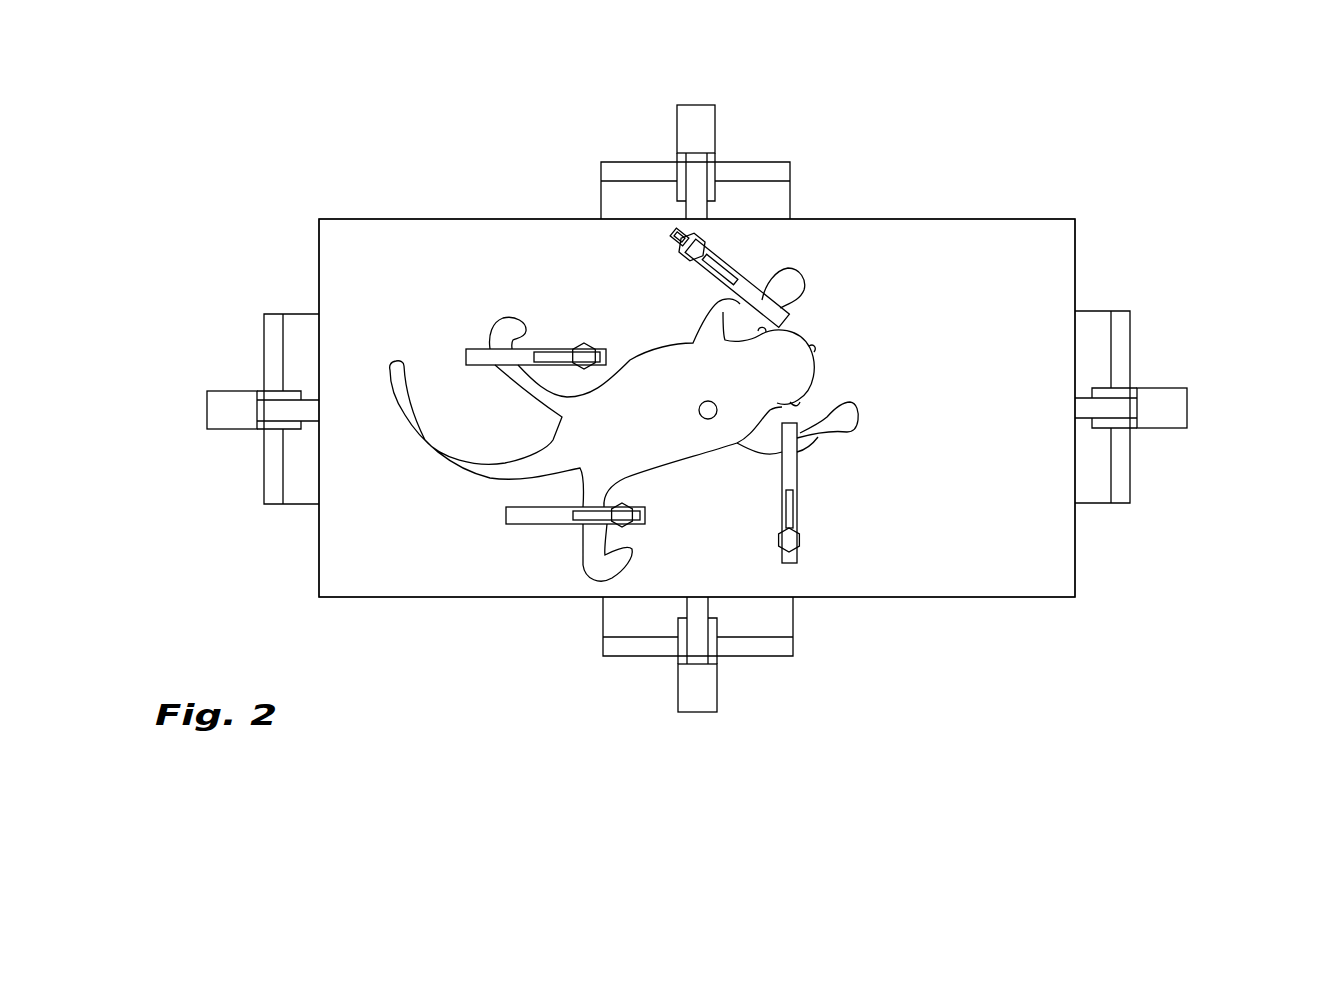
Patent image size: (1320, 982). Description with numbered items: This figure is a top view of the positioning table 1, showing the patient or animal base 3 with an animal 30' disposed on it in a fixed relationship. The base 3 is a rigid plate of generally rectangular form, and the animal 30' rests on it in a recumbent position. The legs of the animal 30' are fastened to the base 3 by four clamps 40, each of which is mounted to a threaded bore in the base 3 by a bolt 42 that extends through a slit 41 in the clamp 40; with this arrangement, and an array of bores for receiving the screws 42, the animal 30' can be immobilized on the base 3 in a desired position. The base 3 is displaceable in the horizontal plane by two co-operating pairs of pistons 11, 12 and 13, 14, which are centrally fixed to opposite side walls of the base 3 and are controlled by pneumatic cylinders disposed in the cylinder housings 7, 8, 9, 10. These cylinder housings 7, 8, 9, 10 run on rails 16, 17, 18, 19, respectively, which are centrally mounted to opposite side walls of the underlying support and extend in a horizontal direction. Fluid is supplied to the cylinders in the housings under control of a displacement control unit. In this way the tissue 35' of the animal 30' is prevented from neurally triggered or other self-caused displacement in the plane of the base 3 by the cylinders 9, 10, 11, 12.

The positioning table 1 is at (870, 183).
The animal base 3 is at (377, 302).
The cylinder housing 7 is at (700, 679).
The cylinder housing 8 is at (700, 132).
The cylinder housing 9 is at (1160, 413).
The cylinder housing 10 is at (231, 414).
The piston 11 is at (700, 605).
The piston 12 is at (697, 210).
The piston 13 is at (1083, 405).
The piston 14 is at (312, 410).
The rail 16 is at (659, 645).
The rail 17 is at (628, 172).
The rail 18 is at (1118, 462).
The rail 19 is at (278, 456).
The animal 30' is at (814, 359).
The tissue 35' is at (968, 483).
The clamp 40 is at (477, 350).
The slit 41 is at (553, 350).
The bolt 42 is at (586, 352).